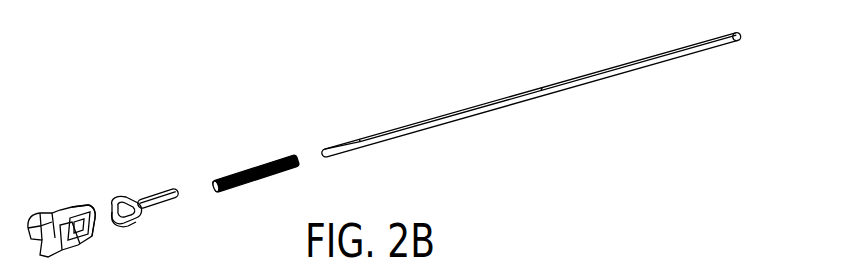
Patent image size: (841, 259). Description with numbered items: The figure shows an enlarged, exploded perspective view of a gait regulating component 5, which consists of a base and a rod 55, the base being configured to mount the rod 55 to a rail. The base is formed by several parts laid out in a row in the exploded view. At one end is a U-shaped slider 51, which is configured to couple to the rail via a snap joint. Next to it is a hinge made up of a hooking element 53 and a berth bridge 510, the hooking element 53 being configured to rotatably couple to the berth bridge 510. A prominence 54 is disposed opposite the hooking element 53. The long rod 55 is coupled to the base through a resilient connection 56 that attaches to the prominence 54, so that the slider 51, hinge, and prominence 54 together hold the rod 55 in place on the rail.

The gait regulating component 5 is at (412, 74).
The U-shaped slider 51 is at (38, 192).
The berth bridge 510 is at (86, 214).
The hooking element 53 is at (130, 172).
The prominence 54 is at (162, 194).
The rod 55 is at (546, 98).
The resilient connection 56 is at (244, 172).